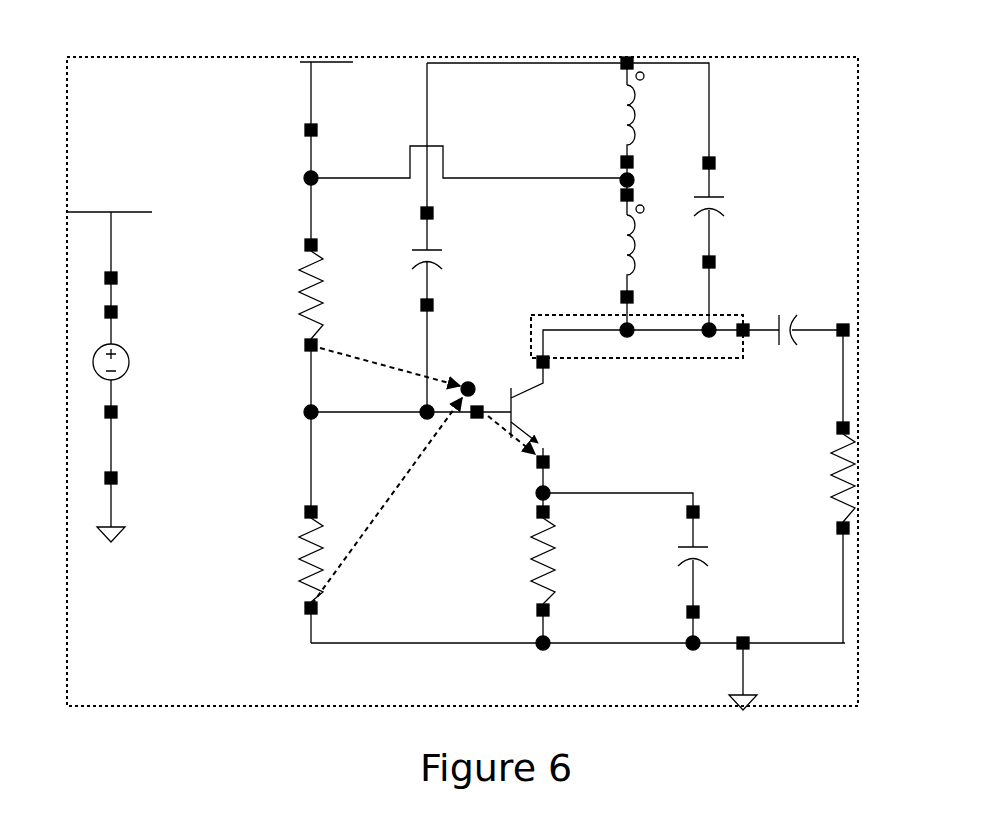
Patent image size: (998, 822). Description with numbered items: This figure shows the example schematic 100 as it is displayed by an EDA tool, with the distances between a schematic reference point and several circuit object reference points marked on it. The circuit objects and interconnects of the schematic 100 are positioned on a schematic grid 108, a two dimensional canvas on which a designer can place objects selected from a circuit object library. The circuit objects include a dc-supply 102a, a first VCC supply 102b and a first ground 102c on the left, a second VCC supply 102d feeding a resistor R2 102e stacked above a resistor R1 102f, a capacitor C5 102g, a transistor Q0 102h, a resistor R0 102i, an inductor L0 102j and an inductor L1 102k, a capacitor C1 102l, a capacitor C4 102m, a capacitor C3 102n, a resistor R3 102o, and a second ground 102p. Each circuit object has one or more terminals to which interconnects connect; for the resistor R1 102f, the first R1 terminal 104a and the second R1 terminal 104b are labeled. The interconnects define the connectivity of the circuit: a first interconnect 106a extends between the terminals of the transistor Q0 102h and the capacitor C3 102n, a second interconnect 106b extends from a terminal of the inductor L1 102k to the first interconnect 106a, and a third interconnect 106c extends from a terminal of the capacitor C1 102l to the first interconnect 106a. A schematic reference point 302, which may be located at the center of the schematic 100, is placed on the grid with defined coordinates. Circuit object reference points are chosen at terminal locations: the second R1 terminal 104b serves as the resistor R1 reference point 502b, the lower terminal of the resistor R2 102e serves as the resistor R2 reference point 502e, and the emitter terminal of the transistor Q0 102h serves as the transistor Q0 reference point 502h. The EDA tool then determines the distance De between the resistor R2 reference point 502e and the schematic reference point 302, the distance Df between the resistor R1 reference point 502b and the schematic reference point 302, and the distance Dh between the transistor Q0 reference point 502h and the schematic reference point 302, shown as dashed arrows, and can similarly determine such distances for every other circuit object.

The schematic 100 is at (798, 37).
The schematic grid 108 is at (906, 108).
The dc-supply 102a is at (76, 366).
The first VCC supply 102b is at (76, 236).
The first ground 102c is at (98, 509).
The second VCC supply 102d is at (295, 78).
The resistor R2 102e is at (283, 296).
The resistor R1 102f is at (272, 566).
The capacitor C5 102g is at (452, 268).
The transistor Q0 102h is at (512, 442).
The resistor R0 102i is at (515, 565).
The inductor L0 102j is at (612, 99).
The inductor L1 102k is at (622, 222).
The capacitor C1 102l is at (730, 238).
The capacitor C4 102m is at (670, 553).
The capacitor C3 102n is at (806, 296).
The resistor R3 102o is at (815, 470).
The second ground 102p is at (718, 683).
The first R1 terminal 104a is at (304, 512).
The second R1 terminal 104b is at (306, 612).
The first interconnect 106a is at (684, 362).
The second interconnect 106b is at (624, 306).
The third interconnect 106c is at (708, 312).
The schematic reference point 302 is at (476, 382).
The resistor R1 reference point 502b is at (318, 617).
The resistor R2 reference point 502e is at (302, 352).
The transistor Q0 reference point 502h is at (556, 462).